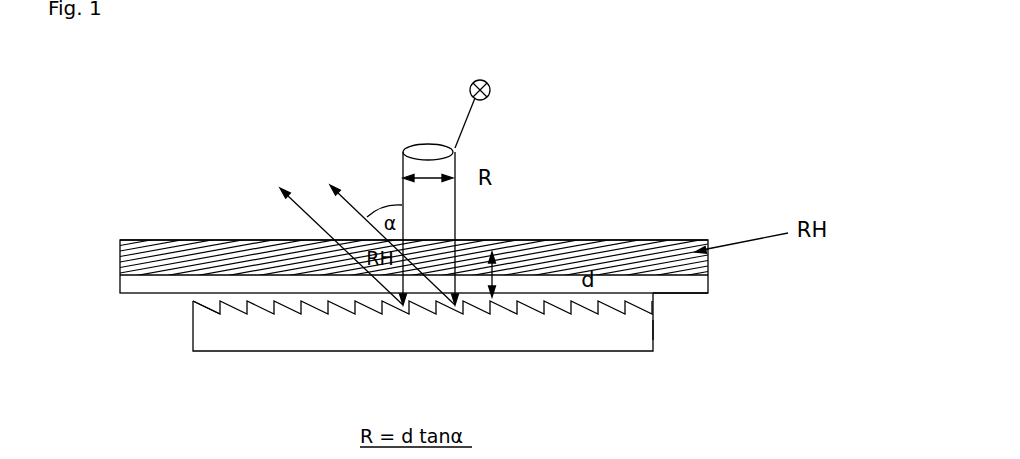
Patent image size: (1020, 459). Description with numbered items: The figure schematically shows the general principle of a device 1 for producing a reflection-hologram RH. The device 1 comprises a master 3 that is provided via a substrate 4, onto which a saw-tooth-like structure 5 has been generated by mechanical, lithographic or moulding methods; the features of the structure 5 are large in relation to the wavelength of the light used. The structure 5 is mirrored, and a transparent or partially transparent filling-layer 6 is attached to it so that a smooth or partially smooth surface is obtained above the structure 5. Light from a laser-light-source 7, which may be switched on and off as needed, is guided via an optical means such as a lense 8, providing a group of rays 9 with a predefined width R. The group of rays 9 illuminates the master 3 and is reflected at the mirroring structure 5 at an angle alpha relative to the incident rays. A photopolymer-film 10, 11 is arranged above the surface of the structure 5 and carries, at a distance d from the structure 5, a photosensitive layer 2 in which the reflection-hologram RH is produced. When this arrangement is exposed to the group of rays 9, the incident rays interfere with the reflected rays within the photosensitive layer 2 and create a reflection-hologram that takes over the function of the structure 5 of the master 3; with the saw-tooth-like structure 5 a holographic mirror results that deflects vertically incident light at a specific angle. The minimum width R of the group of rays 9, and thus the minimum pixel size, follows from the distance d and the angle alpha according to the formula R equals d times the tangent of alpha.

The device 1 is at (622, 215).
The photosensitive layer 2 is at (708, 273).
The master 3 is at (658, 324).
The substrate 4 is at (550, 351).
The structure 5 is at (353, 312).
The at least partially transparent filling-layer 6 is at (191, 305).
The laser-light-source 7 is at (500, 88).
The lense 8 is at (428, 150).
The group of rays 9 is at (437, 222).
The photopolymer-film 10 is at (716, 302).
The photopolymer-film 11 is at (145, 253).